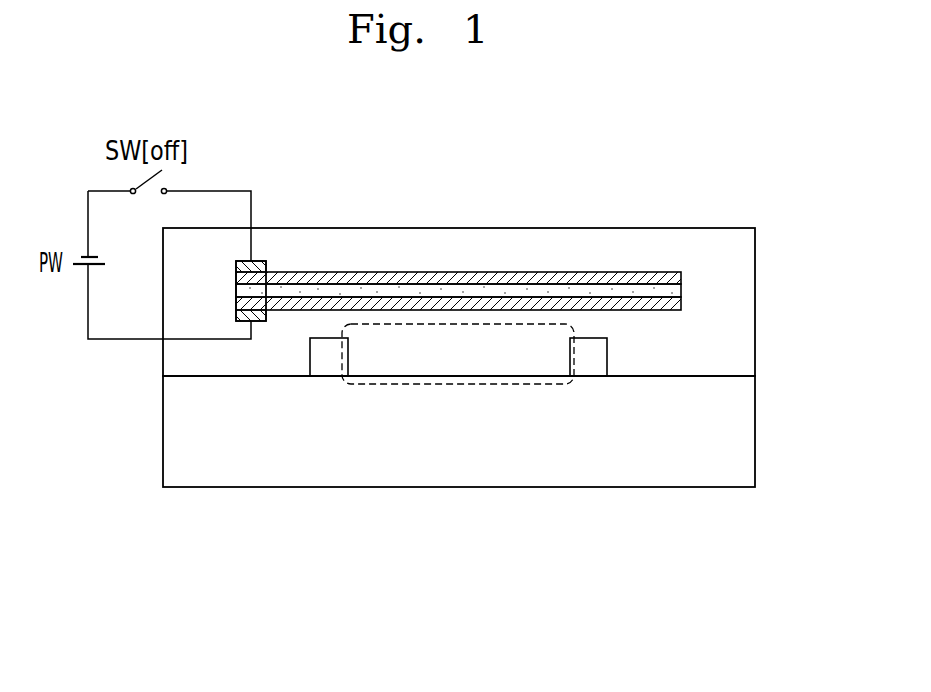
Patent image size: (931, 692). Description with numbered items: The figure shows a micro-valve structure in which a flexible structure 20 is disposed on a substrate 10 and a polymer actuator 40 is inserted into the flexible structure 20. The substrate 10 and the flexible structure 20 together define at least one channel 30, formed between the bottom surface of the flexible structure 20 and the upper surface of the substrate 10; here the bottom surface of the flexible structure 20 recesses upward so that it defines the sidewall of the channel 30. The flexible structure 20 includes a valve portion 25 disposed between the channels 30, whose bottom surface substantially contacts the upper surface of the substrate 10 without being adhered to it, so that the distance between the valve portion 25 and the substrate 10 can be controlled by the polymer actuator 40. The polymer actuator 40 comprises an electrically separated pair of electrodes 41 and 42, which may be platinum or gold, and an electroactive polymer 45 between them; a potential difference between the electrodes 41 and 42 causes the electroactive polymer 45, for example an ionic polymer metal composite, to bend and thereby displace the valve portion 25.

The substrate 10 is at (745, 423).
The flexible structure 20 is at (747, 290).
The valve portion 25 is at (457, 386).
The channel 30 is at (314, 365).
The polymer actuator 40 is at (458, 224).
The electrode 41 is at (537, 176).
The electrode 42 is at (520, 278).
The electroactive polymer 45 is at (458, 288).